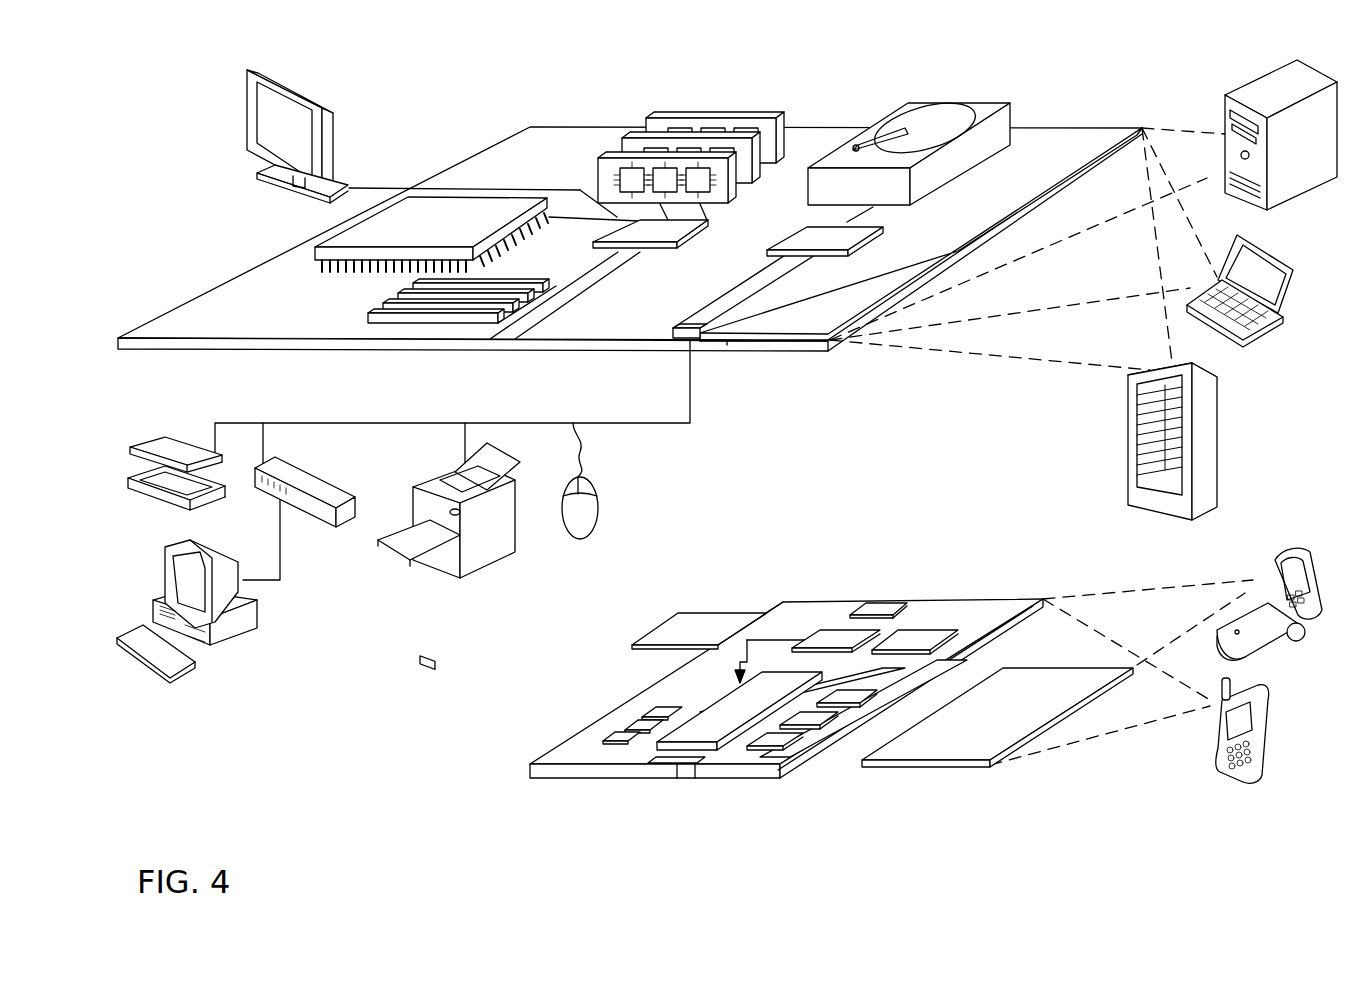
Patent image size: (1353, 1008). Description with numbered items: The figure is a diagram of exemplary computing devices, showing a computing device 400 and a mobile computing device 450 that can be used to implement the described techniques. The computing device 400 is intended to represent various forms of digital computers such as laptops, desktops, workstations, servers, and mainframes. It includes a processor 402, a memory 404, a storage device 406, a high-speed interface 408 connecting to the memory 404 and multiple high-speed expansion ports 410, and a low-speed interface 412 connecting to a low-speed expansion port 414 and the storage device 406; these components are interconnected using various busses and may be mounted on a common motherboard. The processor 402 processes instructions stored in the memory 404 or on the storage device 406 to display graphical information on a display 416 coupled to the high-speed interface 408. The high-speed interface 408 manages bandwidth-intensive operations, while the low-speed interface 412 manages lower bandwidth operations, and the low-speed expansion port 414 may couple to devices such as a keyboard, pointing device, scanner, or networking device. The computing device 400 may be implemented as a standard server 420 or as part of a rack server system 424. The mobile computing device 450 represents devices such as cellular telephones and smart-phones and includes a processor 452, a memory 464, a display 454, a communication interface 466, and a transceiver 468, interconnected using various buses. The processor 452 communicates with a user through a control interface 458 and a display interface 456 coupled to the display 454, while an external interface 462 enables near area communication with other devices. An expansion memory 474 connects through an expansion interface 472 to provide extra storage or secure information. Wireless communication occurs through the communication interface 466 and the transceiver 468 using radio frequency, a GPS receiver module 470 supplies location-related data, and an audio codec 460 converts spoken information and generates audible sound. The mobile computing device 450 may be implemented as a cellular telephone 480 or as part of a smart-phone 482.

The computing device 400 is at (446, 98).
The processor 402 is at (313, 250).
The memory 404 is at (658, 120).
The storage device 406 is at (905, 109).
The high-speed interface 408 is at (625, 231).
The high-speed expansion ports 410 is at (400, 305).
The low-speed interface 412 is at (808, 236).
The low-speed expansion port 414 is at (727, 345).
The display 416 is at (258, 74).
The standard server 420 is at (1226, 116).
The rack server system 424 is at (1128, 466).
The mobile computing device 450 is at (498, 777).
The processor 452 is at (712, 738).
The display 454 is at (955, 753).
The display interface 456 is at (785, 745).
The control interface 458 is at (830, 734).
The audio codec 460 is at (850, 706).
The external interface 462 is at (675, 765).
The memory 464 is at (625, 726).
The communication interface 466 is at (835, 645).
The transceiver 468 is at (912, 641).
The GPS receiver module 470 is at (882, 608).
The expansion interface 472 is at (767, 612).
The expansion memory 474 is at (678, 613).
The cellular telephone 480 is at (1272, 562).
The smart-phone 482 is at (1218, 736).